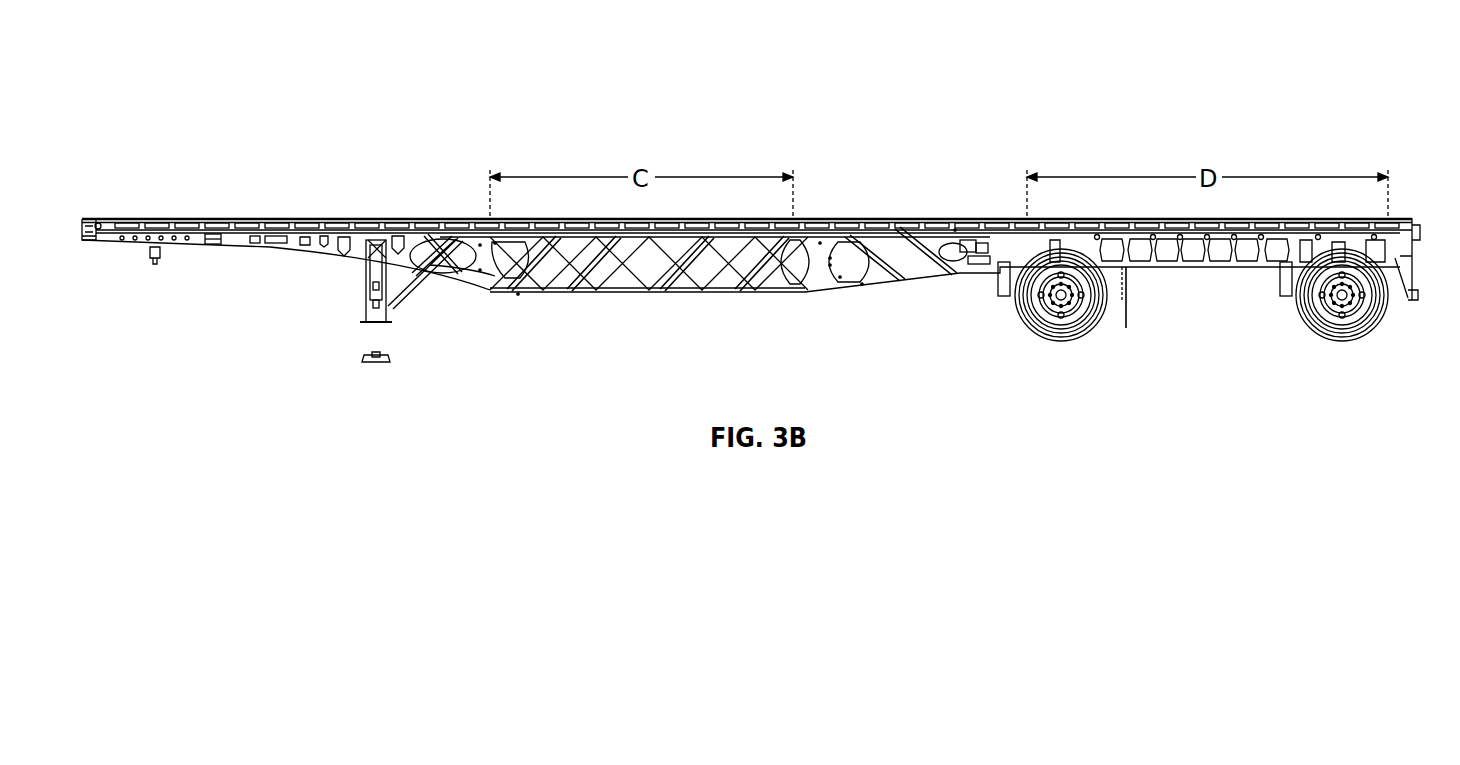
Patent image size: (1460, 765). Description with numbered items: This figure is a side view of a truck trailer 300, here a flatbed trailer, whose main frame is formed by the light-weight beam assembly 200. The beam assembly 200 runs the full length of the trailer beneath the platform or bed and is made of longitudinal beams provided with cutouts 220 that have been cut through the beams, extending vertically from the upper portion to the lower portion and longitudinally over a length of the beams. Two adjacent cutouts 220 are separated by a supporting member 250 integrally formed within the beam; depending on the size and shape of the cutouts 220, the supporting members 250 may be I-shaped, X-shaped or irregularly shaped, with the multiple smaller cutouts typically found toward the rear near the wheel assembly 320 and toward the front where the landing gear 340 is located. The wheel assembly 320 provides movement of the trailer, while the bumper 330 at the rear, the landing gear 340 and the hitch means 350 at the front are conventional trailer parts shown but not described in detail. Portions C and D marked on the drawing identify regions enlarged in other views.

The truck trailer 300 is at (1158, 53).
The light-weight beam assembly 200 is at (655, 293).
The cutouts 220 is at (332, 250).
The supporting member 250 is at (487, 288).
The landing gear 340 is at (375, 330).
The hitch means 350 is at (153, 258).
The wheel assembly 320 is at (1075, 342).
The bumper 330 is at (1408, 278).